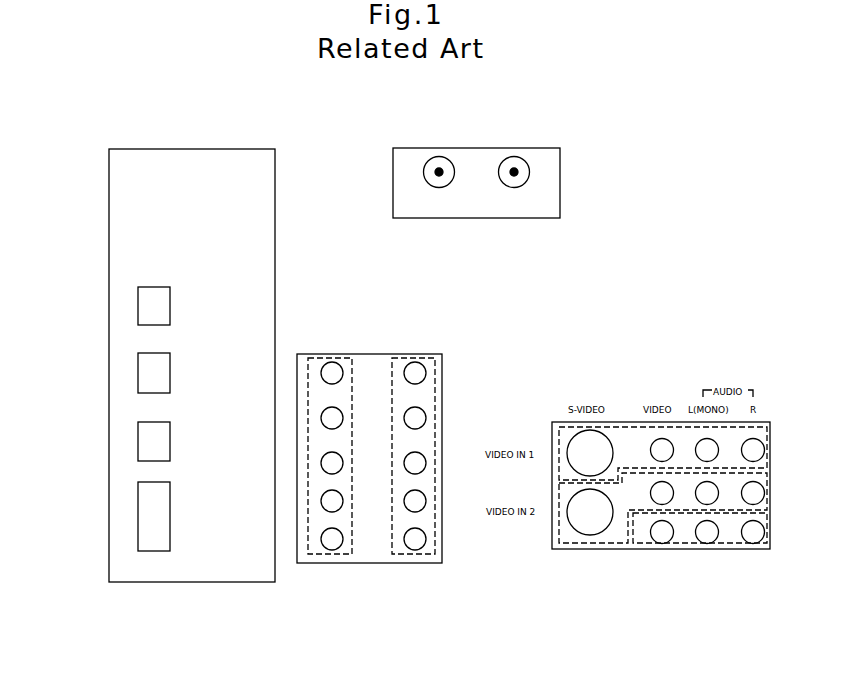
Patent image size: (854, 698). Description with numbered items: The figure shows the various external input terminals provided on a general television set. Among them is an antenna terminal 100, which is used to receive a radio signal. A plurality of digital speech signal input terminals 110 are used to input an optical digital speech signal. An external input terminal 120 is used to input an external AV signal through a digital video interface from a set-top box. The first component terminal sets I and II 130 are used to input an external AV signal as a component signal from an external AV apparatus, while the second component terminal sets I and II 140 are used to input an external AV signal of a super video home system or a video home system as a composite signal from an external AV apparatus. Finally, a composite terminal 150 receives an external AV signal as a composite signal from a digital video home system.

The antenna terminal 100 is at (512, 157).
The digital speech signal input terminals 110 is at (147, 305).
The external input terminal 120 is at (147, 517).
The first component terminal sets I and II 130 is at (335, 355).
The second component terminal sets I and II 140 is at (560, 480).
The composite terminal 150 is at (697, 549).